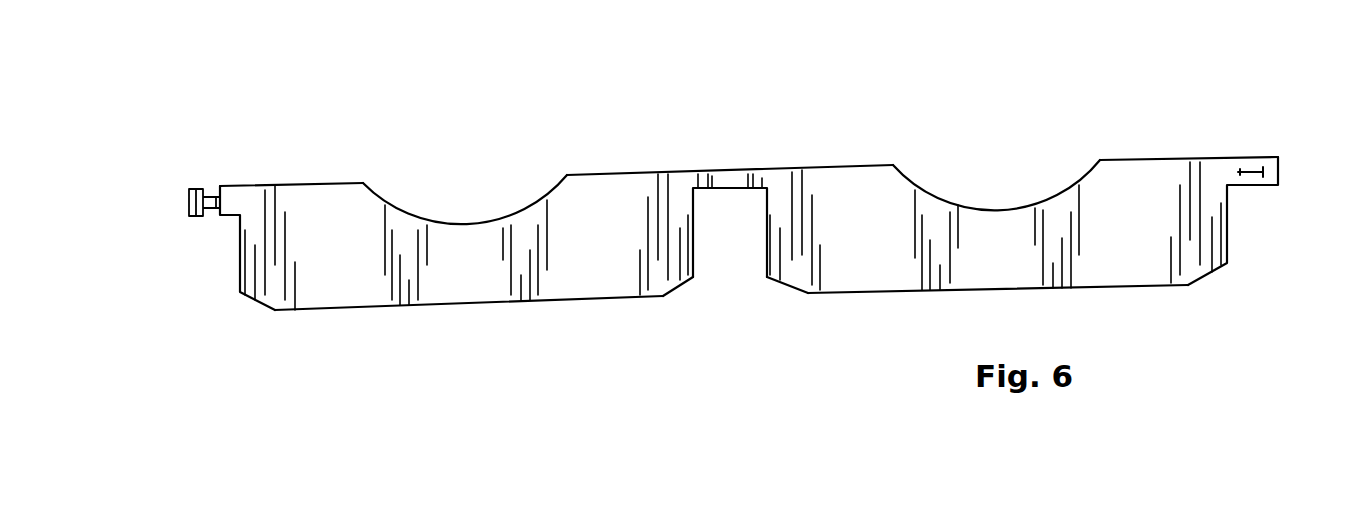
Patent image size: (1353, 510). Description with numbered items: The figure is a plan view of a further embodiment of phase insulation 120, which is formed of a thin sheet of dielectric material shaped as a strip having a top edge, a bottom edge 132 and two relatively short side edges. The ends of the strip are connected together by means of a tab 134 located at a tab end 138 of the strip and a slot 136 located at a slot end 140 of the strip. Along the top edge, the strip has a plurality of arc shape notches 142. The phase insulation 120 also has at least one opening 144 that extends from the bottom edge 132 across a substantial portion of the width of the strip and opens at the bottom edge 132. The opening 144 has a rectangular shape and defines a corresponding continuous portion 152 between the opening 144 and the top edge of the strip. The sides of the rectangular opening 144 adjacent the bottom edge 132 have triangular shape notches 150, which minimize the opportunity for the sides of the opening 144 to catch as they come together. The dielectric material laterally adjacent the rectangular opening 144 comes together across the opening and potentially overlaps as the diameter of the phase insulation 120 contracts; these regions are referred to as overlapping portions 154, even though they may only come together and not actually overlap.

The phase insulation 120 is at (389, 96).
The bottom edge 132 is at (403, 308).
The tab 134 is at (191, 187).
The slot 136 is at (1247, 160).
The tab end 138 is at (240, 267).
The slot end 140 is at (1228, 237).
The arc shape notches 142 is at (496, 108).
The opening 144 is at (755, 263).
The triangular shape notches 150 is at (780, 317).
The continuous portion 152 is at (730, 180).
The overlapping portions 154 is at (683, 233).